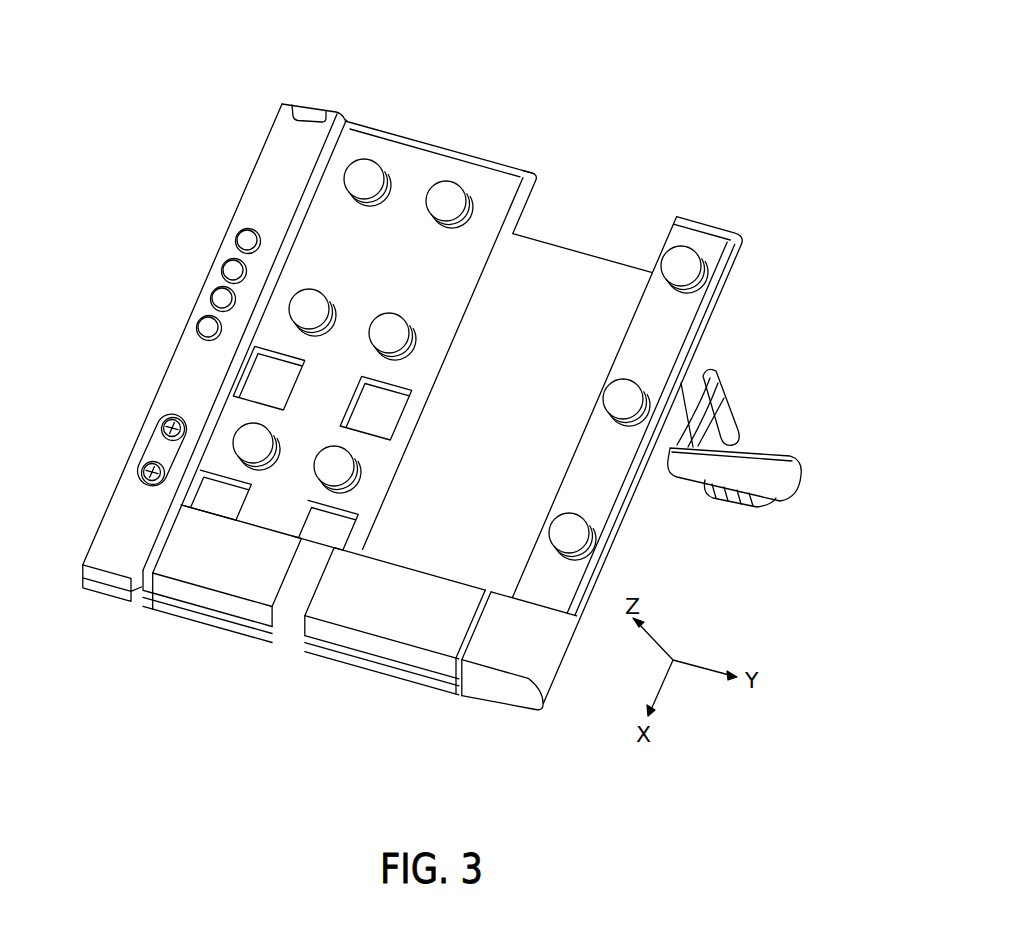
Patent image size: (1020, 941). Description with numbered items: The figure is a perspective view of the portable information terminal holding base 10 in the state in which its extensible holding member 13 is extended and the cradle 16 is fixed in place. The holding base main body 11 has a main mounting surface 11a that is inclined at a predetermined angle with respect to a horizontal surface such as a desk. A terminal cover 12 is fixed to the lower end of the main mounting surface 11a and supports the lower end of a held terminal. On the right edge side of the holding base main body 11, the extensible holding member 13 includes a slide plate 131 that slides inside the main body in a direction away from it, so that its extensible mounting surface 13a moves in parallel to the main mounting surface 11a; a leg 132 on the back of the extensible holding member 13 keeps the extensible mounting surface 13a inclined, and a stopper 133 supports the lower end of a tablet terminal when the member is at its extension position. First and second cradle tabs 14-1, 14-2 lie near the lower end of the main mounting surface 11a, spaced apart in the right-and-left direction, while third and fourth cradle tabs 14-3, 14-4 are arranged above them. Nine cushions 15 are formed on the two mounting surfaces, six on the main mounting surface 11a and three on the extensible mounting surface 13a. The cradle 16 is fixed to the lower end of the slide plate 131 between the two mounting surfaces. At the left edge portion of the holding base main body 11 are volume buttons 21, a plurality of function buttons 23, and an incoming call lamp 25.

The portable information terminal holding base 10 is at (661, 142).
The holding base main body 11 is at (277, 167).
The main mounting surface 11a is at (413, 173).
The terminal cover 12 is at (223, 582).
The extensible holding member 13 is at (630, 508).
The extensible mounting surface 13a is at (677, 320).
The slide plate 131 is at (577, 277).
The leg 132 is at (753, 470).
The stopper 133 is at (503, 660).
The first cradle tab 14-1 is at (220, 507).
The second cradle tab 14-2 is at (318, 533).
The third cradle tab 14-3 is at (263, 390).
The fourth cradle tab 14-4 is at (385, 418).
The cushion 15 is at (366, 178).
The cradle 16 is at (390, 630).
The volume buttons 21 is at (146, 466).
The function buttons 23 is at (208, 327).
The incoming call lamp 25 is at (312, 104).